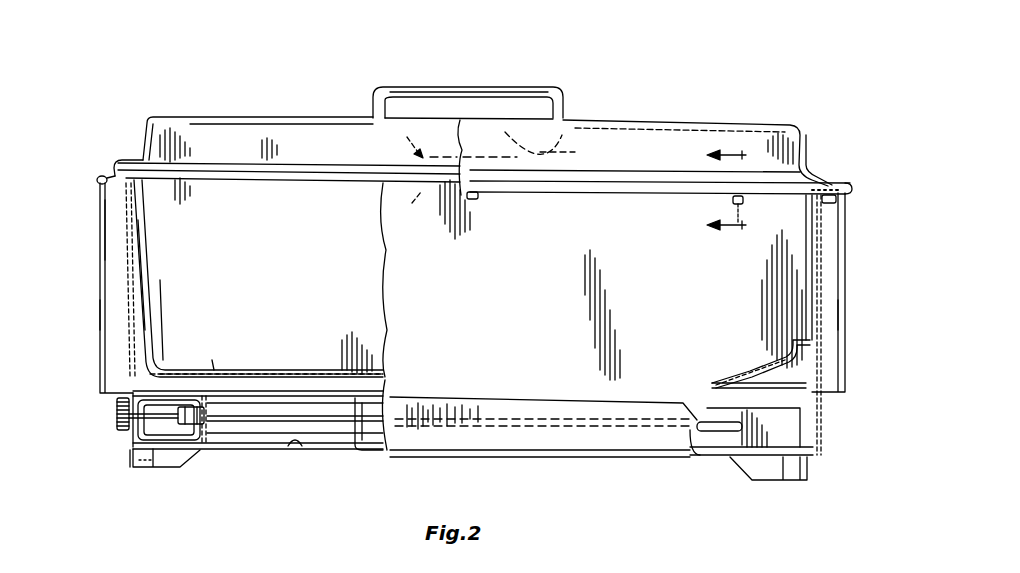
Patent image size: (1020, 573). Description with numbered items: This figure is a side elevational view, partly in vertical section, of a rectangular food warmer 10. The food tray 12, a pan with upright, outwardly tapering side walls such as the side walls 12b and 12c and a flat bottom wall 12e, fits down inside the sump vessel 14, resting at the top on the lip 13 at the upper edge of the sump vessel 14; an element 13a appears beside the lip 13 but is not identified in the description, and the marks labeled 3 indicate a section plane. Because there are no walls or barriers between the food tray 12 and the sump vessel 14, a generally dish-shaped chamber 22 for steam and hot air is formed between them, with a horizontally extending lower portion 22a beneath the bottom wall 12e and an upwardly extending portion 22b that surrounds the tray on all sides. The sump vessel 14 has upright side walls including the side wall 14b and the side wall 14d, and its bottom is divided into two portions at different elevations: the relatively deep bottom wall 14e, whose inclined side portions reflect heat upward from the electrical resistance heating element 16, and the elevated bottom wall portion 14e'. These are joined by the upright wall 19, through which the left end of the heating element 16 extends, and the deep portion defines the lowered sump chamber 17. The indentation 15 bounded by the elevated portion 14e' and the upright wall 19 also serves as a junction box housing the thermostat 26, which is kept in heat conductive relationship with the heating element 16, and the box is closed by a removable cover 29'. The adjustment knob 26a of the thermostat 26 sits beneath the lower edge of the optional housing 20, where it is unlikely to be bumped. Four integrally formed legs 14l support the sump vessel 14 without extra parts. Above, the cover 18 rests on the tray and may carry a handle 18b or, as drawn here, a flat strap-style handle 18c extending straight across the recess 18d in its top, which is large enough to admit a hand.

The food warmer 10 is at (246, 100).
The food tray 12 is at (131, 160).
The side wall 12b is at (158, 268).
The side wall 12c is at (374, 291).
The bottom wall 12e is at (311, 368).
The lip 13 is at (98, 179).
The latch 13a is at (473, 200).
The sump vessel 14 is at (820, 268).
The side wall 14b is at (125, 233).
The side wall 14d is at (813, 357).
The bottom wall 14e is at (277, 480).
The elevated bottom wall portion 14e' is at (178, 322).
The legs 14l is at (128, 460).
The indentation 15 is at (215, 368).
The heating element 16 is at (325, 437).
The sump chamber 17 is at (388, 400).
The cover 18 is at (793, 128).
The handle 18b is at (507, 90).
The strap-style handle 18c is at (507, 147).
The recess 18d is at (429, 209).
The upright wall 19 is at (213, 428).
The housing 20 is at (100, 318).
The chamber 22 is at (797, 393).
The lower portion 22a is at (258, 368).
The upwardly extending portion 22b is at (133, 265).
The thermostat 26 is at (213, 401).
The adjustment knob 26a is at (117, 415).
The removable cover 29' is at (186, 485).
The section line 3- 3 is at (717, 189).